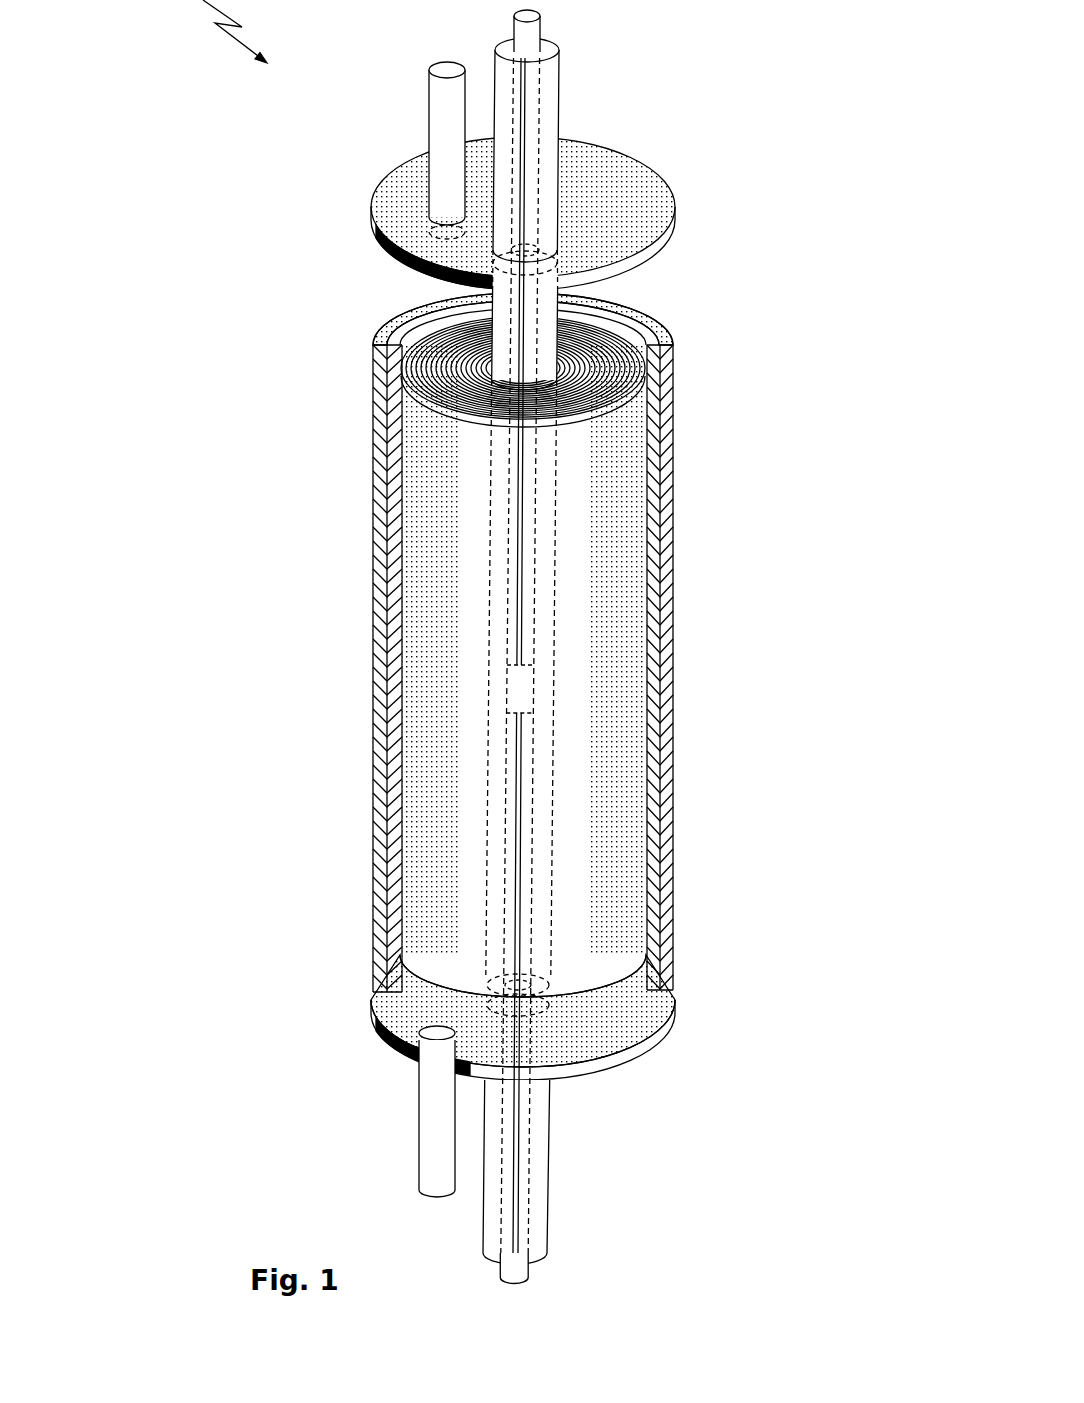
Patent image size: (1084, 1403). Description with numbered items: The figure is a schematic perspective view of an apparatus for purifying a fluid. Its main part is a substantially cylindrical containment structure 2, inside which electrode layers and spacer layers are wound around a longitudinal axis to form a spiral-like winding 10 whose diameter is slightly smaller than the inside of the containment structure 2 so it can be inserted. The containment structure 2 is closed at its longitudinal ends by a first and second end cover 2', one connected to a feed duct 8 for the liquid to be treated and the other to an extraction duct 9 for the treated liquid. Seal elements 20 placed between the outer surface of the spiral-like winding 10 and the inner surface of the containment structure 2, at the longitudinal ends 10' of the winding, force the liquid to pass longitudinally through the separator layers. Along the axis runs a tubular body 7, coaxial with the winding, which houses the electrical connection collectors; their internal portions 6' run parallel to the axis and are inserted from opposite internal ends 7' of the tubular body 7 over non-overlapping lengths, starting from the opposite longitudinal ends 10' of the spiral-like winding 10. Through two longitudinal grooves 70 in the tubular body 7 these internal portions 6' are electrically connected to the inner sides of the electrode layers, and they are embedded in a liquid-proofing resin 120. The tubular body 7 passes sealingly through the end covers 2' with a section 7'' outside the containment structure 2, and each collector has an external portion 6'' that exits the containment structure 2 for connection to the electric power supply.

The containment structure 2 is at (487, 710).
The seal elements 20 is at (670, 380).
The spiral-like winding 10 is at (436, 646).
The longitudinal ends of the spiral-like winding 10' is at (434, 733).
The liquid-proofing resin 120 is at (590, 345).
The internal ends of the tubular body 7' is at (433, 671).
The end cover 2' is at (554, 617).
The extraction duct 9 is at (440, 120).
The feed duct 8 is at (437, 1130).
The section of the tubular body outside the containment body 7'' is at (622, 651).
The tubular body 7 is at (631, 698).
The internal portion of the electric connection collector 6' is at (619, 655).
The external portion of the electric connection collector 6'' is at (579, 643).
The longitudinal grooves 70 is at (525, 92).